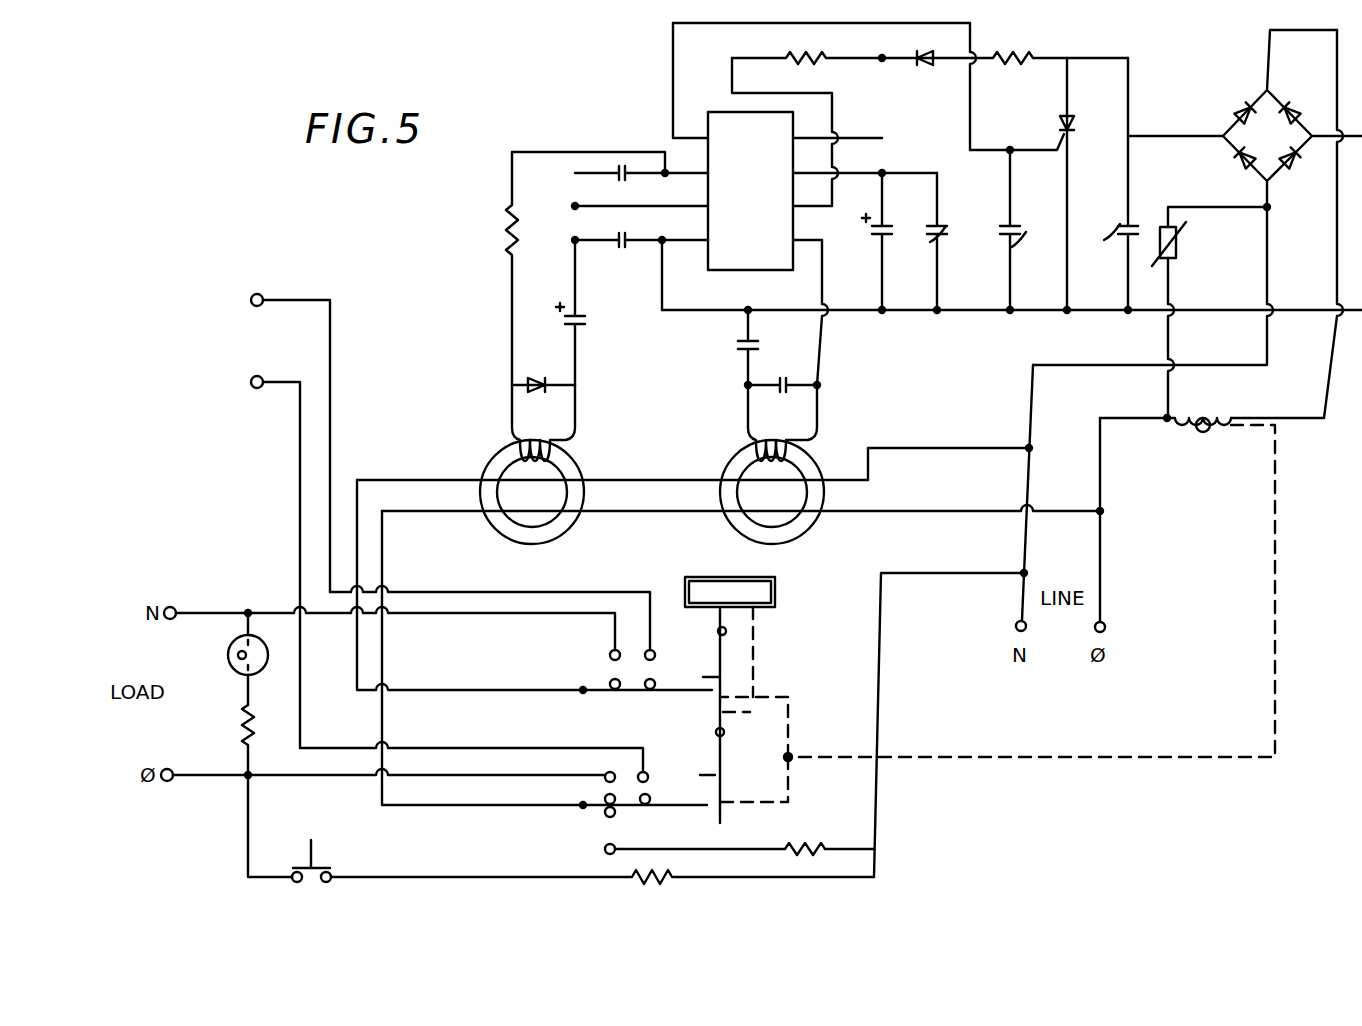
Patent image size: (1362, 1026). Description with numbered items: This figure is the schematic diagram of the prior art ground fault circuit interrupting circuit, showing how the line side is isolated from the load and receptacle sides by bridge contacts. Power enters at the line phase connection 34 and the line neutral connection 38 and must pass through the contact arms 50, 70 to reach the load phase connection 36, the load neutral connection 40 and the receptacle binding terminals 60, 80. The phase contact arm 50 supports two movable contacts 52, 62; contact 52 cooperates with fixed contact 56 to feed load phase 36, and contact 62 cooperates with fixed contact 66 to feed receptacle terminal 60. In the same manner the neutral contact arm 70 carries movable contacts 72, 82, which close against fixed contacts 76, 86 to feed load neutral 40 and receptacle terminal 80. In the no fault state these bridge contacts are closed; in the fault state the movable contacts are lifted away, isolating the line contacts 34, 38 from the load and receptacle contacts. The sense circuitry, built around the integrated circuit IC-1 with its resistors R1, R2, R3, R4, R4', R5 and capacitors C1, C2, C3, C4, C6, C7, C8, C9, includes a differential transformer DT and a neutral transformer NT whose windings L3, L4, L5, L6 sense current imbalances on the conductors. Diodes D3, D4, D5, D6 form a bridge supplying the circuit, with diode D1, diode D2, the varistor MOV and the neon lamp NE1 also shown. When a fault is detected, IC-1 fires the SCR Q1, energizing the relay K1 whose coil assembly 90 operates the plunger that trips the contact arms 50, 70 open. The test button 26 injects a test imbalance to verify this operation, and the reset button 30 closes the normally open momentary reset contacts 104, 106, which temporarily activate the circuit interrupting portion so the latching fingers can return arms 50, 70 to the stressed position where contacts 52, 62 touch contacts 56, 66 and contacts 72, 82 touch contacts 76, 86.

The binding terminal 80 is at (252, 295).
The binding terminal 60 is at (251, 379).
The load neutral connection 40 is at (175, 608).
The load phase connection 36 is at (172, 780).
The test button 26 is at (360, 843).
The fixed contact 86 is at (653, 649).
The fixed contact 76 is at (610, 652).
The movable contact 72 is at (611, 681).
The movable contact 82 is at (654, 681).
The contact arm 70 is at (683, 697).
The fixed contact 56 is at (606, 773).
The fixed contact 66 is at (647, 772).
The movable contact 62 is at (649, 796).
The movable contact 52 is at (605, 798).
The momentary reset contact 104 is at (605, 813).
The contact arm 50 is at (697, 815).
The momentary reset contact 106 is at (604, 852).
The reset button 30 is at (783, 585).
The line neutral connection 38 is at (1016, 627).
The line phase connection 34 is at (1106, 627).
The coil assembly 90 is at (1212, 433).
The integrated circuit IC-1 is at (750, 191).
The resistor R1 is at (1050, 45).
The resistor R2 is at (807, 45).
The resistor R3 is at (525, 268).
The resistor R4 is at (602, 868).
The resistor R4' is at (745, 836).
The resistor R5 is at (267, 788).
The capacitor C1 is at (1115, 184).
The capacitor C2 is at (1018, 228).
The capacitor C3 is at (734, 347).
The capacitor C4 is at (882, 241).
The capacitor C6 is at (635, 251).
The capacitor C7 is at (635, 184).
The capacitor C8 is at (581, 312).
The capacitor C9 is at (782, 372).
The diode D1 is at (927, 45).
The diode D2 is at (543, 371).
The bridge diode D3 is at (1238, 104).
The bridge diode D4 is at (1300, 104).
The bridge diode D5 is at (1237, 166).
The bridge diode D6 is at (1302, 166).
The SCR Q1 is at (1072, 124).
The metal oxide varistor MOV is at (1209, 312).
The relay K1 is at (1165, 405).
The neon lamp NE1 is at (228, 659).
The differential transformer DT is at (544, 492).
The neutral transformer NT is at (785, 492).
The winding L3 is at (810, 423).
The winding L4 is at (732, 423).
The winding L5 is at (574, 423).
The winding L6 is at (498, 423).